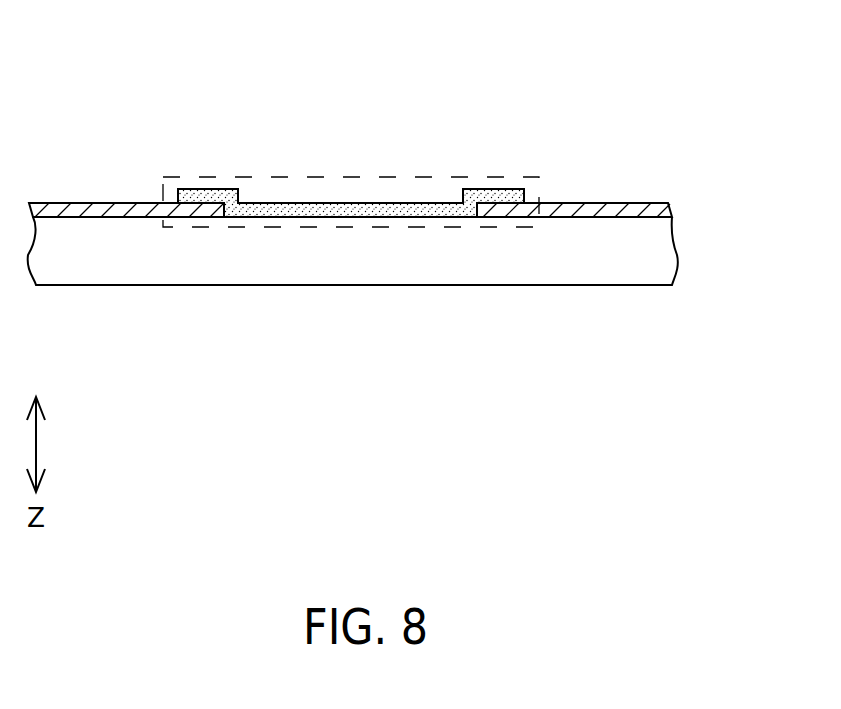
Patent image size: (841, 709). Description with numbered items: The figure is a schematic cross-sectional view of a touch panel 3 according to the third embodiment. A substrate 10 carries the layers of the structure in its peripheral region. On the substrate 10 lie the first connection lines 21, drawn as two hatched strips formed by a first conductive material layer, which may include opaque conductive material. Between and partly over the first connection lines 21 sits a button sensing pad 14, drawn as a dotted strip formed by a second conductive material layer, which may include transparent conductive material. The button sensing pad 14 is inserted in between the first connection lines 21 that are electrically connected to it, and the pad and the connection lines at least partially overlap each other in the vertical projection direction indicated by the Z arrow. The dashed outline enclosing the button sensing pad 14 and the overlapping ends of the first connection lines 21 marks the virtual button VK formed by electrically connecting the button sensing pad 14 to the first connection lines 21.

The touch panel 3 is at (652, 68).
The substrate 10 is at (343, 274).
The first connection lines 21 is at (76, 203).
The button sensing pads 14 is at (330, 203).
The virtual button VK is at (462, 177).